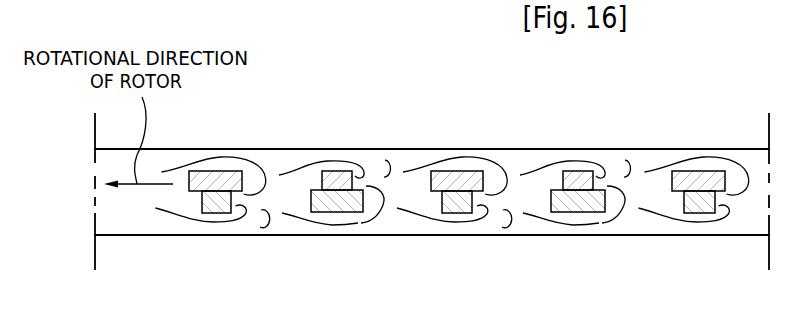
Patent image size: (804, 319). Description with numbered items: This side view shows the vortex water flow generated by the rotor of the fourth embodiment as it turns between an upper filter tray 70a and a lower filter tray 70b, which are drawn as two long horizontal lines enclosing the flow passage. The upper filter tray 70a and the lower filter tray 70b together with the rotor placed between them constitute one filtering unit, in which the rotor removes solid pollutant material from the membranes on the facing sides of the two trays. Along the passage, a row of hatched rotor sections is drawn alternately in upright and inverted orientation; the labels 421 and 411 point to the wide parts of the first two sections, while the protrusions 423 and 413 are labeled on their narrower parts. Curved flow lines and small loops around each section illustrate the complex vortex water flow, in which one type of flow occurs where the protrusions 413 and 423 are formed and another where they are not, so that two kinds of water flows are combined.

The filter tray 70a is at (460, 149).
The filter tray 70b is at (468, 235).
The head portion of first protrusion 421 is at (213, 184).
The protrusion 423 is at (213, 207).
The protrusion 413 is at (342, 183).
The base portion of second protrusion 411 is at (342, 205).